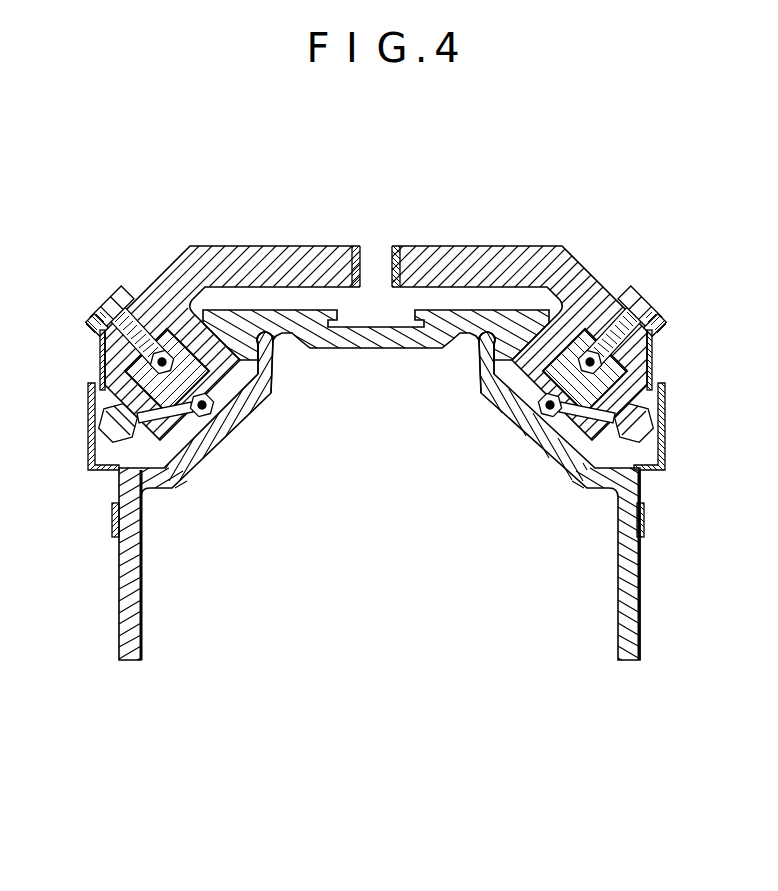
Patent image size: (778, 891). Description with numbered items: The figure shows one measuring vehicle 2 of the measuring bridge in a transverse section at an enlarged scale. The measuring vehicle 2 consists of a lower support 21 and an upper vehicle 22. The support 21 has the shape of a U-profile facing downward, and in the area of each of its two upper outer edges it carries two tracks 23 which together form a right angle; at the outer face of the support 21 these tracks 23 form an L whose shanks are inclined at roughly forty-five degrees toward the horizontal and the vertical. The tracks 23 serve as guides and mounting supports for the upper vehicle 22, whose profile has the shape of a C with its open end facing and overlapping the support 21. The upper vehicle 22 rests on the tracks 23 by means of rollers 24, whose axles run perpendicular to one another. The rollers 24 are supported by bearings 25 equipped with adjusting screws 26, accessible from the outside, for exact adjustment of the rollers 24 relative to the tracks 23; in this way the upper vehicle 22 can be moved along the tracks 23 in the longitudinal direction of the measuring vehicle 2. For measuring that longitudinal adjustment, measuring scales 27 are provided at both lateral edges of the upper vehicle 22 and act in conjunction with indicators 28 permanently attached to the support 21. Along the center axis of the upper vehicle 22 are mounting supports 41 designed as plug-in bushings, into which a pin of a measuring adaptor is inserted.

The measuring vehicle 2 is at (377, 490).
The support 21 is at (125, 594).
The upper vehicle 22 is at (256, 246).
The tracks 23 is at (250, 390).
The rollers 24 is at (190, 306).
The bearings 25 is at (193, 416).
The adjusting screws 26 is at (120, 300).
The measuring scales 27 is at (100, 354).
The indicators 28 is at (92, 440).
The mounting supports 41 is at (383, 258).